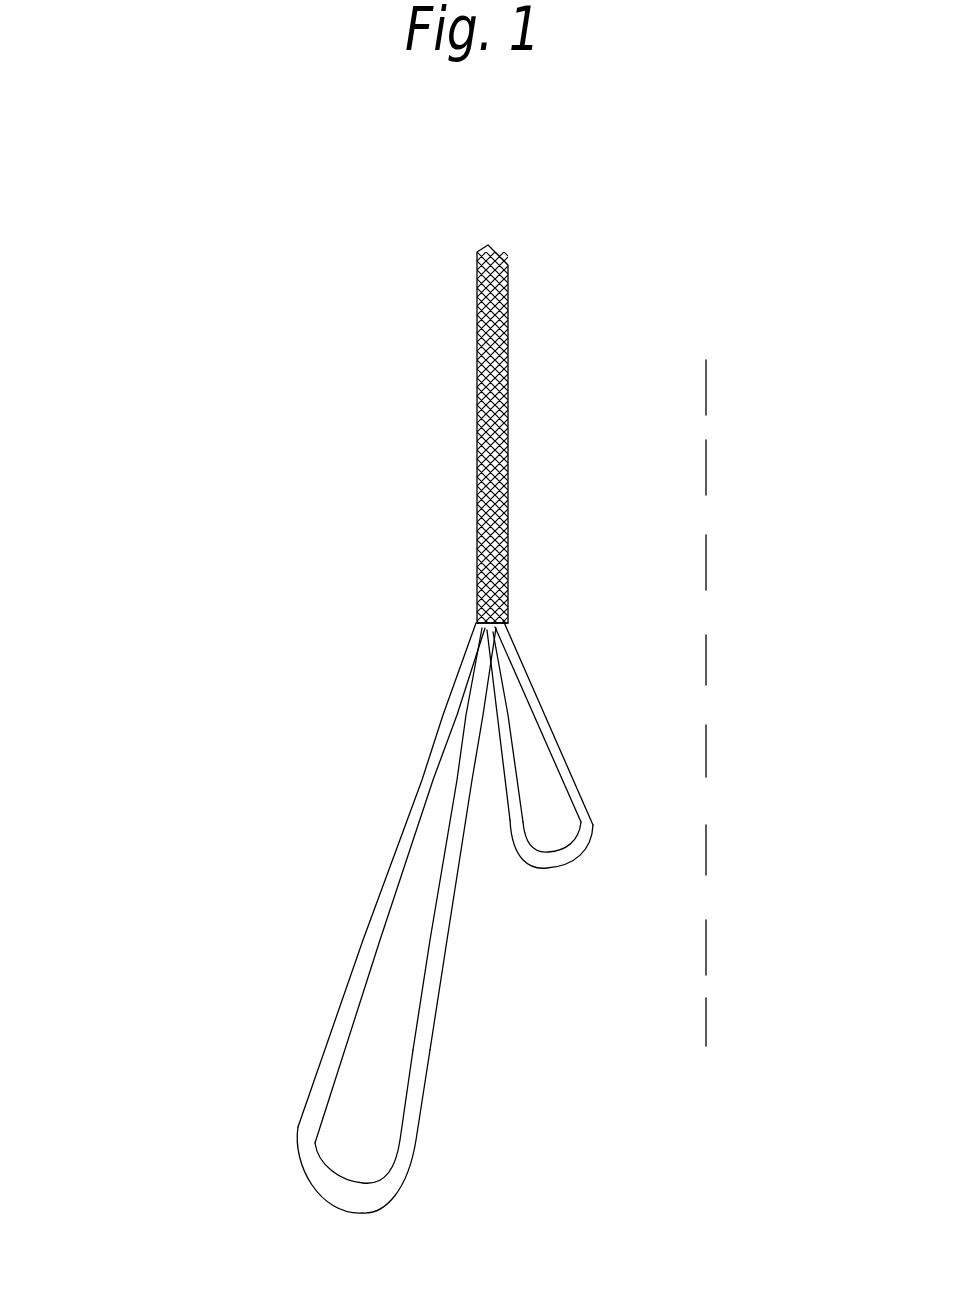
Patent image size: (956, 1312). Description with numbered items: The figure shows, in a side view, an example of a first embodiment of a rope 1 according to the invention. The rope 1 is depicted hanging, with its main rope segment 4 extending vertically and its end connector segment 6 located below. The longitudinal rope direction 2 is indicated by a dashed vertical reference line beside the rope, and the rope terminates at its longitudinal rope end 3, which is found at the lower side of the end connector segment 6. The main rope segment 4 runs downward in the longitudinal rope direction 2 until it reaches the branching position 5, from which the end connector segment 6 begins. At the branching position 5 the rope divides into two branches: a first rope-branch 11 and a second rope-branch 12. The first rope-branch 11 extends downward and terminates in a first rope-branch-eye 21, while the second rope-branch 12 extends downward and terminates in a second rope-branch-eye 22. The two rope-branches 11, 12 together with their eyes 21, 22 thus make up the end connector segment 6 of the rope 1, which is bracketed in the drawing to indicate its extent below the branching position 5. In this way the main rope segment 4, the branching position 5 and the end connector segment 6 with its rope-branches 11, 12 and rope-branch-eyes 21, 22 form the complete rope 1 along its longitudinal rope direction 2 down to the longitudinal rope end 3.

The rope 1 is at (172, 206).
The longitudinal rope direction 2 is at (707, 462).
The longitudinal rope end 3 is at (507, 1089).
The main rope segment 4 is at (476, 405).
The branching position 5 is at (444, 634).
The end connector segment 6 is at (170, 625).
The first rope-branch 11 is at (360, 819).
The second rope-branch 12 is at (572, 699).
The first rope-branch-eye 21 is at (320, 961).
The second rope-branch-eye 22 is at (606, 783).